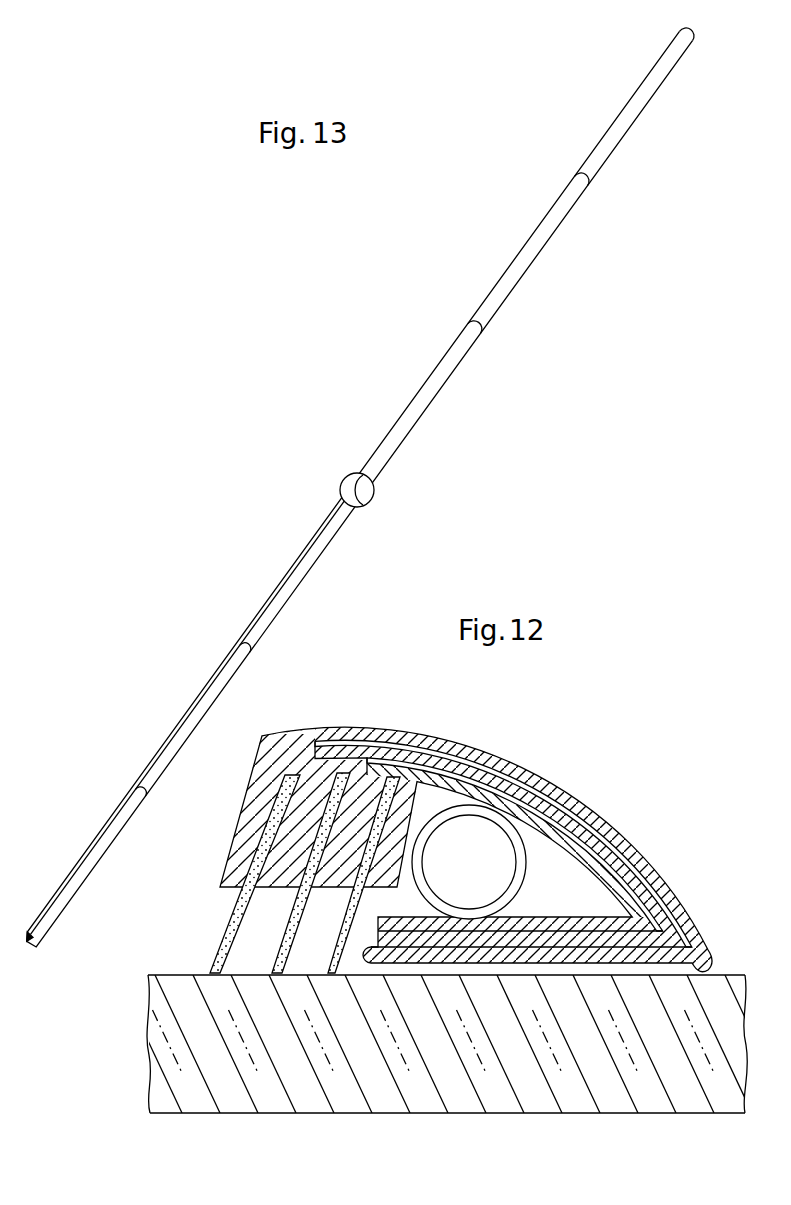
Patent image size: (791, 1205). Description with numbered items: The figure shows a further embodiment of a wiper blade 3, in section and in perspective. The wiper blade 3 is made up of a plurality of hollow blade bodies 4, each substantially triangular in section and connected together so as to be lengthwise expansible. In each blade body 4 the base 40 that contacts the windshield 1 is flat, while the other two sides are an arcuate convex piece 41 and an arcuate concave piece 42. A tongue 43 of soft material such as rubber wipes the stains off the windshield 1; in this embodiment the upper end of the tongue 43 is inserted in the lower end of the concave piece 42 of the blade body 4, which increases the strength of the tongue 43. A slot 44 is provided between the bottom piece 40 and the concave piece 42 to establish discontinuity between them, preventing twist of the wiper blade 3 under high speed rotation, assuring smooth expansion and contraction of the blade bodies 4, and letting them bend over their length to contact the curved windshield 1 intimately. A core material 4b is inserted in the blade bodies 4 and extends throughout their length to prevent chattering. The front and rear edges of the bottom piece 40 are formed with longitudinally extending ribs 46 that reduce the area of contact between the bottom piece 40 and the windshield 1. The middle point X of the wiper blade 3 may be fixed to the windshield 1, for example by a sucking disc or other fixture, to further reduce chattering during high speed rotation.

In FIG. 12, the windshield 1 is at (257, 1105).
In FIG. 13, the wiper blade 3 is at (397, 417).
In FIG. 13, the blade body 4 is at (640, 103).
In FIG. 12, the blade body 4 is at (530, 793).
In FIG. 12, the core material 4b is at (453, 810).
In FIG. 12, the base 40 is at (537, 963).
In FIG. 12, the convex piece 41 is at (503, 757).
In FIG. 12, the concave piece 42 is at (302, 767).
In FIG. 13, the tongue 43 is at (299, 555).
In FIG. 12, the tongue 43 is at (232, 912).
In FIG. 12, the slot 44 is at (390, 903).
In FIG. 12, the rib 46 is at (366, 967).
In FIG. 13, the middle point X is at (378, 510).